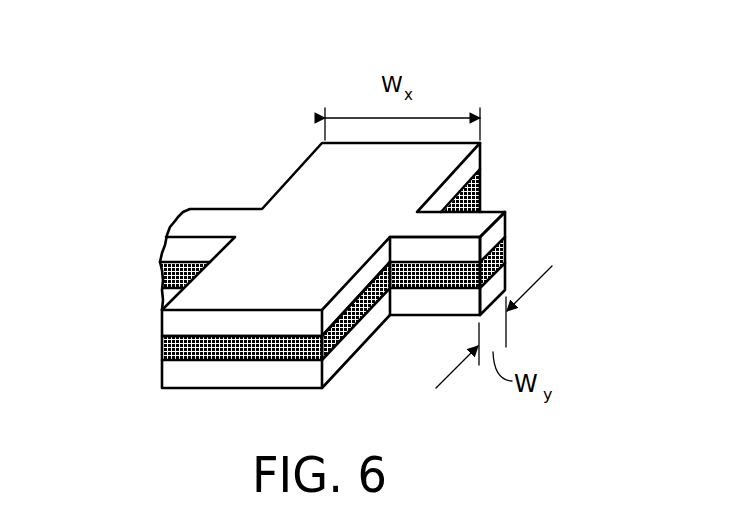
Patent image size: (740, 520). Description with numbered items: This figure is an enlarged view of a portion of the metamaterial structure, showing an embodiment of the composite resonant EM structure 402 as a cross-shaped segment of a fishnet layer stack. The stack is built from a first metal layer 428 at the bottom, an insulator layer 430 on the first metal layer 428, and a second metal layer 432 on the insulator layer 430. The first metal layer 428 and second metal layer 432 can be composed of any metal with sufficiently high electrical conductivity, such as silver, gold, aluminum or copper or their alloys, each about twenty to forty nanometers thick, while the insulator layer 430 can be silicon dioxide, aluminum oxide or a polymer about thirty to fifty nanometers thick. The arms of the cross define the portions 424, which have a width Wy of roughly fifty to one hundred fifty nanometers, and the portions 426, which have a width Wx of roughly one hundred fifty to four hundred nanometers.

The composite resonant EM structure 402 is at (339, 216).
The portions 424 is at (477, 226).
The portions 426 is at (323, 162).
The first metal layer 428 is at (172, 372).
The insulator layer 430 is at (172, 351).
The second metal layer 432 is at (172, 325).